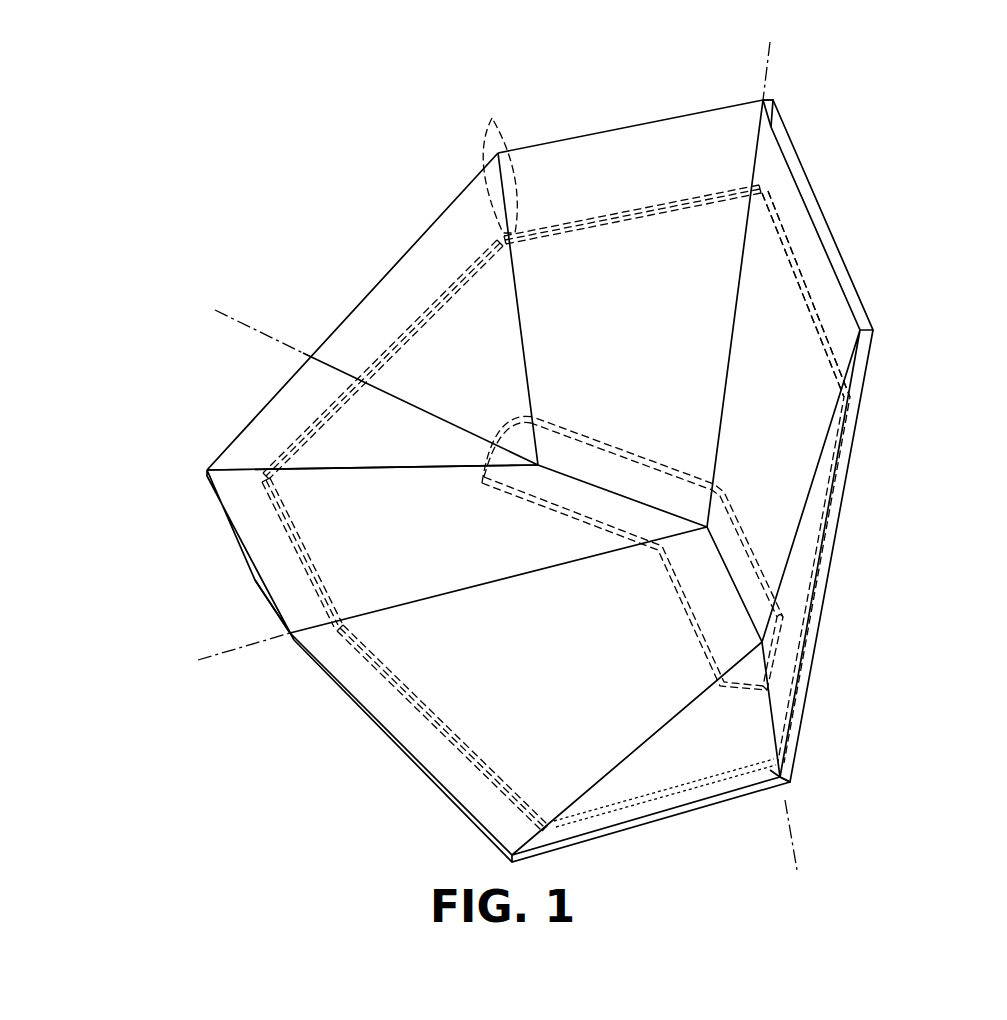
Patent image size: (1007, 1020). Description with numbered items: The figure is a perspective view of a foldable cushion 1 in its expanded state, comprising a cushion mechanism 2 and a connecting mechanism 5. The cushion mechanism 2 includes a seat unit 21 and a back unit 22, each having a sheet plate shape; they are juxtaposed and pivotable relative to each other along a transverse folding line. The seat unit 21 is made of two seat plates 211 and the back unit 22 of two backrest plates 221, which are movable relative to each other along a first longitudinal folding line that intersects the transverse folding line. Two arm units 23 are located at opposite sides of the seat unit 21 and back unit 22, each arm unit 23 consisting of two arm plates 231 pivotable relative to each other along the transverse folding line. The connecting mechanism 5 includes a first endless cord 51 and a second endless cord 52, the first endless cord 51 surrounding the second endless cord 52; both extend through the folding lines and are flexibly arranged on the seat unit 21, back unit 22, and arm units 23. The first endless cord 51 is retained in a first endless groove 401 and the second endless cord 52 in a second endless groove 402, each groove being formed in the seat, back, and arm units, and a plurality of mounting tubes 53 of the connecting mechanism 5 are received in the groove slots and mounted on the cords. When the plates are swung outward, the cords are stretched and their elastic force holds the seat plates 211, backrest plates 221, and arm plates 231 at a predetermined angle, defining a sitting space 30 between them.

The foldable cushion 1 is at (268, 172).
The cushion mechanism 2 is at (884, 378).
The seat unit 21 is at (398, 746).
The back unit 22 is at (603, 132).
The arm unit 23 is at (258, 406).
The seat plate 211 is at (322, 643).
The backrest plate 221 is at (772, 128).
The arm plate 231 is at (763, 790).
The sitting space 30 is at (347, 545).
The connecting mechanism 5 is at (432, 296).
The first endless cord 51 is at (790, 242).
The second endless cord 52 is at (745, 532).
The mounting tube 53 is at (496, 161).
The first endless groove 401 is at (815, 305).
The second endless groove 402 is at (770, 560).